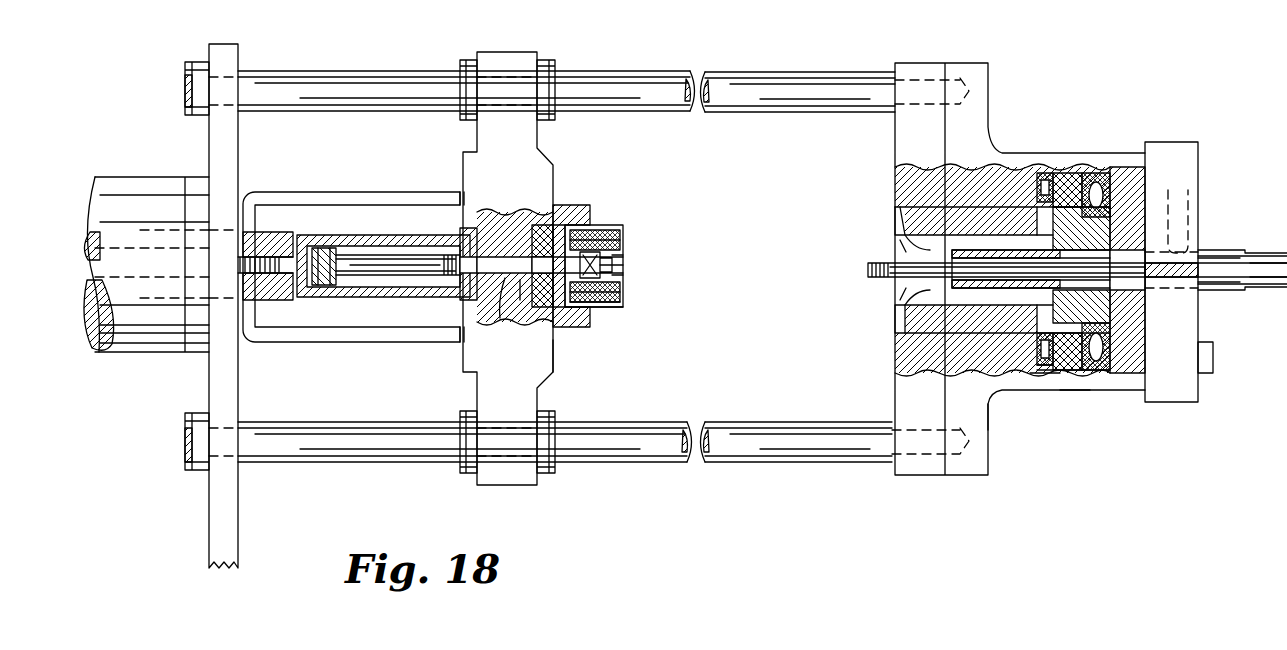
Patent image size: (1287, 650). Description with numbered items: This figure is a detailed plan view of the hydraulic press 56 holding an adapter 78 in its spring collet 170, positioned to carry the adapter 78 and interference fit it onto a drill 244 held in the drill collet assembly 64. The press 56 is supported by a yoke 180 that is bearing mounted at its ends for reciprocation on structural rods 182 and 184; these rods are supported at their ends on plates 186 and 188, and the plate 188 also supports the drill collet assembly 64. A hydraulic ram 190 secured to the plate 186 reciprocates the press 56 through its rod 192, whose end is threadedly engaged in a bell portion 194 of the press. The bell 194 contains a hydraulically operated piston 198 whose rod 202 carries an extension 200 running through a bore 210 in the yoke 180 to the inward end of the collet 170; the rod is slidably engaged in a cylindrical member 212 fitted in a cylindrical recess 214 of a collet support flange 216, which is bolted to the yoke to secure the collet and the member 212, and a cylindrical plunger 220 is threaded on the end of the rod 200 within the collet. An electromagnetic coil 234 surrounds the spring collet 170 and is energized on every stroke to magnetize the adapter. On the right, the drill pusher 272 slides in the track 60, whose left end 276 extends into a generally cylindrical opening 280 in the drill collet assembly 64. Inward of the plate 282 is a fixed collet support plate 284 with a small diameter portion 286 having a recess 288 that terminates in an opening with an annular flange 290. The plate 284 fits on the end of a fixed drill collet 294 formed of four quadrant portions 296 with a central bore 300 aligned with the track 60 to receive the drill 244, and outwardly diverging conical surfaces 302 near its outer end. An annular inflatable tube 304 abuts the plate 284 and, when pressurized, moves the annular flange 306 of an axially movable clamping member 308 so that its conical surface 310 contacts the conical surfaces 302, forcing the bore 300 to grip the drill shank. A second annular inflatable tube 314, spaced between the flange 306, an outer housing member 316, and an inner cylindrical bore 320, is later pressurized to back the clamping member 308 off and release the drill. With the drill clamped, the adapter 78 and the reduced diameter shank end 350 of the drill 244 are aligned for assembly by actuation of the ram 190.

The hydraulic press 56 is at (556, 364).
The track 60 is at (1254, 286).
The drill collet assembly 64 is at (1073, 393).
The adapter 78 is at (620, 260).
The spring collet 170 is at (620, 278).
The yoke 180 is at (536, 160).
The structural rod 182 is at (608, 74).
The structural rod 184 is at (608, 466).
The plate 186 is at (222, 572).
The plate 188 is at (908, 478).
The hydraulic ram 190 is at (140, 358).
The rod 192 is at (270, 240).
The bell portion 194 is at (300, 330).
The hydraulically operated piston 198 is at (316, 258).
The extension 200 is at (510, 217).
The rod 202 is at (385, 254).
The bore 210 is at (504, 314).
The cylindrical member 212 is at (542, 203).
The cylindrical recess 214 is at (570, 230).
The collet support flange 216 is at (548, 300).
The cylindrical plunger 220 is at (595, 226).
The electromagnetic coil 234 is at (623, 306).
The drill 244 is at (1224, 260).
The drill pusher 272 is at (1254, 258).
The left end of the track 276 is at (1022, 258).
The cylindrical opening 280 is at (1172, 242).
The plate 282 is at (1170, 142).
The collet support plate 284 is at (1128, 168).
The small diameter portion 286 is at (1055, 375).
The recess 288 is at (1150, 350).
The annular flange 290 is at (987, 418).
The fixed drill collet 294 is at (893, 297).
The quadrant portions 296 is at (970, 216).
The central bore 300 is at (895, 262).
The conical surfaces 302 is at (892, 345).
The annular inflatable tube 304 is at (1085, 379).
The annular flange 306 is at (1080, 180).
The clamping member 308 is at (893, 320).
The conical surface 310 is at (895, 240).
The second annular inflatable tube 314 is at (1045, 387).
The housing member 316 is at (1035, 200).
The inner cylindrical bore 320 is at (1000, 308).
The reduced diameter shank end 350 is at (873, 282).